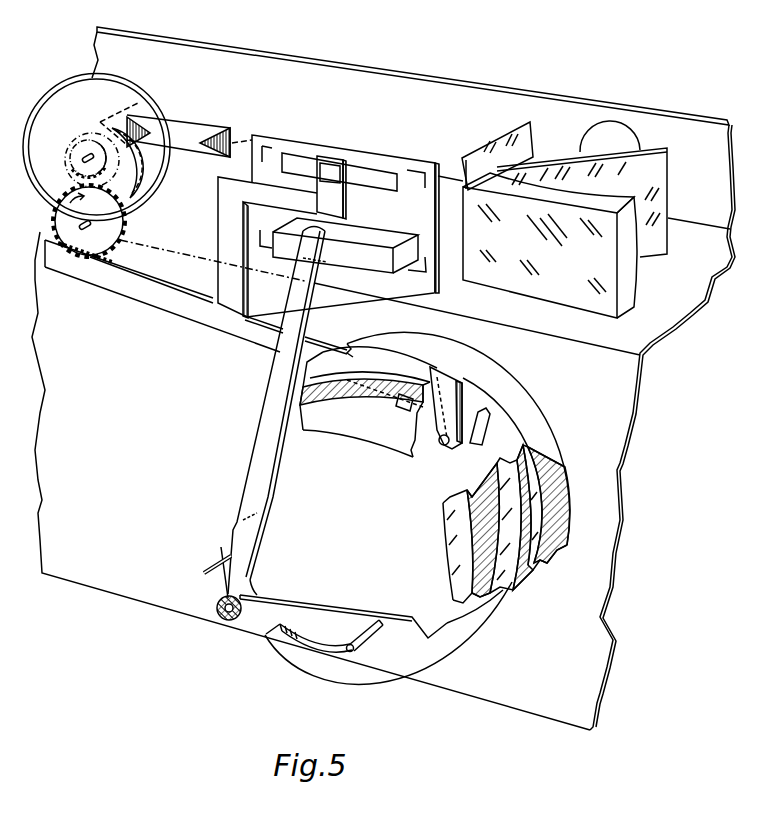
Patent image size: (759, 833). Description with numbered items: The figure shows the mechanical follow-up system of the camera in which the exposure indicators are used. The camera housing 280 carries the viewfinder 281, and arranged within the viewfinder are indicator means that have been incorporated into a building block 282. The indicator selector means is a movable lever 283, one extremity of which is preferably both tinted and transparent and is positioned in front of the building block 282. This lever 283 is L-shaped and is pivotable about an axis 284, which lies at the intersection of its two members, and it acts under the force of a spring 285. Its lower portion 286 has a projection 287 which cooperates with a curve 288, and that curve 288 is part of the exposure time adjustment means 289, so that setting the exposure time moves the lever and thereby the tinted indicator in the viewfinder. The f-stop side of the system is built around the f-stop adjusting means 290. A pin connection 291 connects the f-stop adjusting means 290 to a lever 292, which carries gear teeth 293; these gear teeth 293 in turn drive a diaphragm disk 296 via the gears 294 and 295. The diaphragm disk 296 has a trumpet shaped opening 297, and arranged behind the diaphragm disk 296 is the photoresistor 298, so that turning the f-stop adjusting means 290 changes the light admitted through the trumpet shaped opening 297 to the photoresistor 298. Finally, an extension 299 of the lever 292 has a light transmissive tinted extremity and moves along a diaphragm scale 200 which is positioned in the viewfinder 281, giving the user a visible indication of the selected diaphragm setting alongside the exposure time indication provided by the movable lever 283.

The diaphragm scale 200 is at (317, 157).
The camera housing 280 is at (150, 604).
The viewfinder 281 is at (440, 240).
The building block 282 is at (350, 232).
The movable lever 283 is at (270, 412).
The pivot axis 284 is at (232, 622).
The spring 285 is at (220, 590).
The lower portion of lever 286 is at (331, 613).
The projection 287 is at (350, 654).
The curve 288 is at (384, 655).
The exposure time adjustment means 289 is at (471, 620).
The f-stop adjusting means 290 is at (523, 403).
The pointer 291 is at (447, 450).
The lever 292 is at (210, 317).
The gear teeth 293 is at (93, 270).
The gear 294 is at (124, 250).
The gear 295 is at (66, 150).
The diaphragm disk 296 is at (78, 95).
The trumpet shaped opening 297 is at (140, 194).
The photoresistor 298 is at (192, 131).
The extension of lever 299 is at (272, 192).